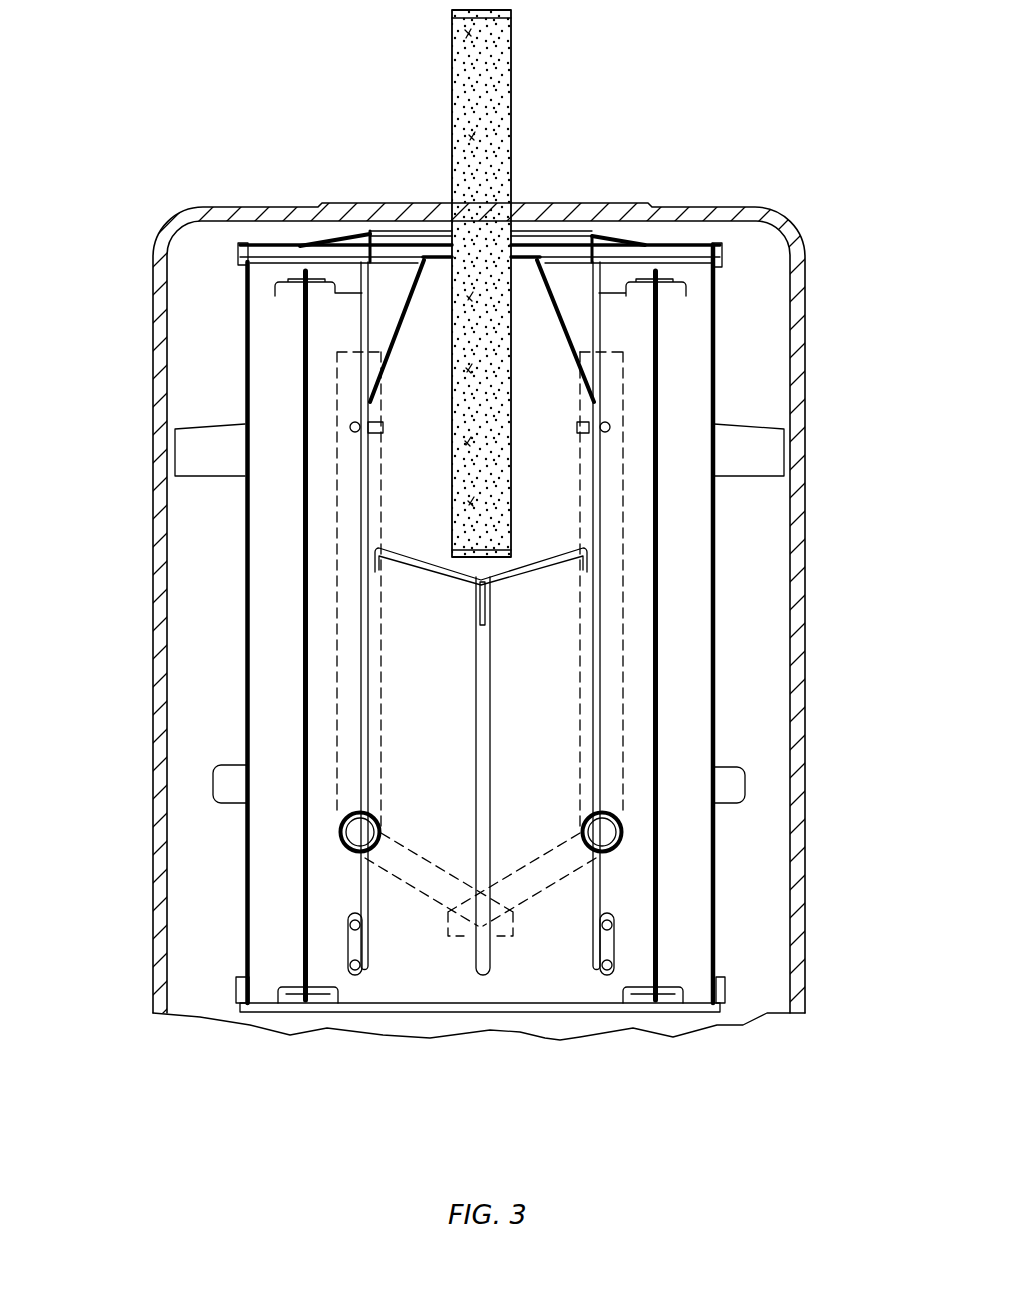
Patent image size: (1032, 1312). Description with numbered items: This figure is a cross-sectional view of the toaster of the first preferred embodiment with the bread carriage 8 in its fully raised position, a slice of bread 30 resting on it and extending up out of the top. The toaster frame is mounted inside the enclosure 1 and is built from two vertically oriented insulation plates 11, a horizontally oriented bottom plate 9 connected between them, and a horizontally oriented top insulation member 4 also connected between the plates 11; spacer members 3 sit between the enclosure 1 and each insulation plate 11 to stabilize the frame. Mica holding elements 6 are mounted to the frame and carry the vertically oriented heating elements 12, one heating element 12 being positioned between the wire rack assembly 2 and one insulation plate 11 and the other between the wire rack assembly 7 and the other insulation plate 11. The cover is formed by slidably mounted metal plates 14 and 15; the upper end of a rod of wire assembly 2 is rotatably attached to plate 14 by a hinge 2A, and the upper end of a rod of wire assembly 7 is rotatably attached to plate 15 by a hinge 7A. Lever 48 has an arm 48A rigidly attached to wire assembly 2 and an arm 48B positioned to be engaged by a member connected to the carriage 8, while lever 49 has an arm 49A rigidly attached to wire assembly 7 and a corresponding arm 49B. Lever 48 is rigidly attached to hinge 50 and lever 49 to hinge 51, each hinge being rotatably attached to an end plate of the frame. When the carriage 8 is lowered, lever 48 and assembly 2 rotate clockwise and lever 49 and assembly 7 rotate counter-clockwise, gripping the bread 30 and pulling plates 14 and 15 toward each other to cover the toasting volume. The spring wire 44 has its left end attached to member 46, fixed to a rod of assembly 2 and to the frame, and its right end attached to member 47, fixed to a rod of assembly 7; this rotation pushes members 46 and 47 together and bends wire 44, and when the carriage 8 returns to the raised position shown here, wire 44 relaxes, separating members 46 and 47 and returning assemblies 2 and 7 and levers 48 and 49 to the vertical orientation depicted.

The enclosure 1 is at (164, 754).
The wire rack assembly 2 is at (362, 688).
The hinge 2A is at (370, 257).
The spacer members 3 is at (185, 452).
The top insulation member 4 is at (278, 243).
The mica holding elements 6 is at (690, 280).
The wire rack assembly 7 is at (598, 750).
The hinge 7A is at (593, 250).
The bread carriage 8 is at (565, 551).
The bottom plate 9 is at (567, 1012).
The insulation plates 11 is at (243, 318).
The heating elements 12 is at (303, 401).
The metal plate 14 is at (323, 256).
The metal plate 15 is at (623, 245).
The slice of bread 30 is at (511, 92).
The spring wire 44 is at (440, 257).
The member 46 is at (380, 434).
The member 47 is at (580, 430).
The lever 48 is at (337, 585).
The arm 48A is at (360, 622).
The arm 48B is at (408, 873).
The lever 49 is at (622, 438).
The arm 49A is at (603, 680).
The arm 49B is at (560, 871).
The hinge 50 is at (340, 838).
The hinge 51 is at (622, 838).